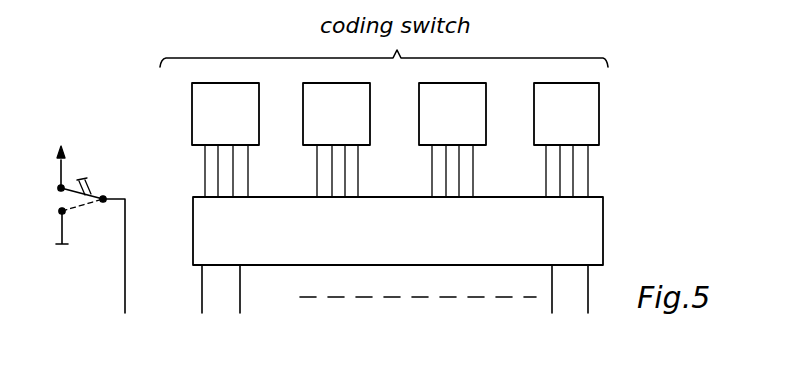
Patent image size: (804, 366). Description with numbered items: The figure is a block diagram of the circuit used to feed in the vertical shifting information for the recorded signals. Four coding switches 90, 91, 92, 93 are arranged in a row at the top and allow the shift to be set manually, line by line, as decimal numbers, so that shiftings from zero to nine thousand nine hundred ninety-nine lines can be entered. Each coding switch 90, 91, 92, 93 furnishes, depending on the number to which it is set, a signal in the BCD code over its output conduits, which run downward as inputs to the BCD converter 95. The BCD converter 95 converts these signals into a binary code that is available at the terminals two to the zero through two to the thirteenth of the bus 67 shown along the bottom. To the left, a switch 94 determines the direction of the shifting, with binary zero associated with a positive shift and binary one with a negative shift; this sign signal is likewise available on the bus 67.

The coding switch 90 is at (248, 123).
The coding switch 91 is at (359, 123).
The coding switch 92 is at (475, 123).
The coding switch 93 is at (590, 123).
The switch 94 is at (98, 191).
The BCD converter 95 is at (596, 233).
The bus 67 is at (108, 316).